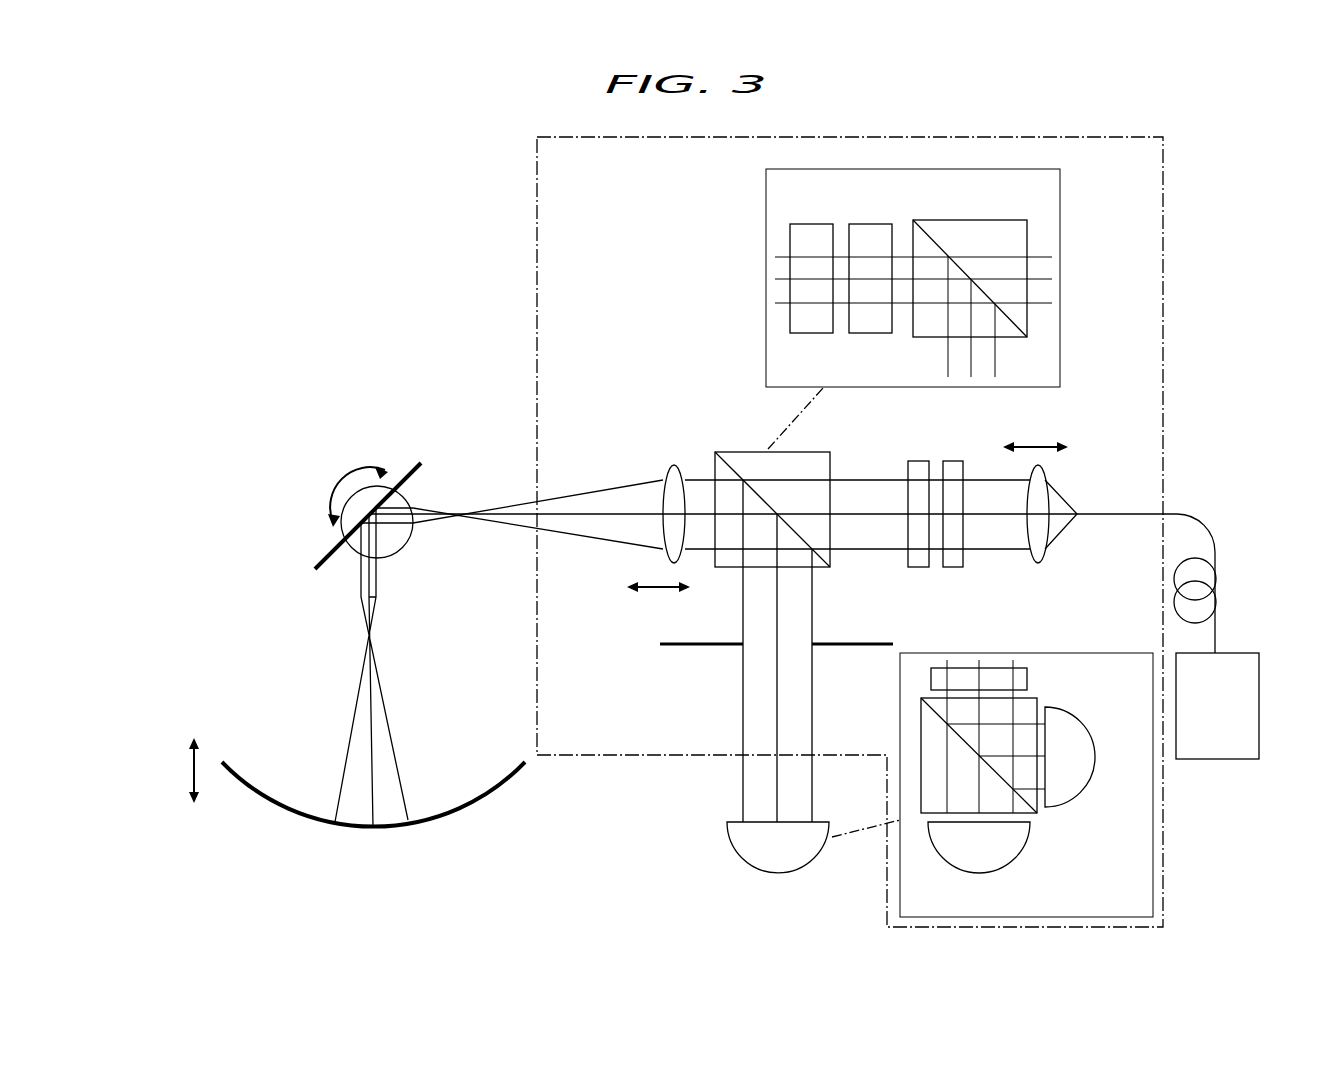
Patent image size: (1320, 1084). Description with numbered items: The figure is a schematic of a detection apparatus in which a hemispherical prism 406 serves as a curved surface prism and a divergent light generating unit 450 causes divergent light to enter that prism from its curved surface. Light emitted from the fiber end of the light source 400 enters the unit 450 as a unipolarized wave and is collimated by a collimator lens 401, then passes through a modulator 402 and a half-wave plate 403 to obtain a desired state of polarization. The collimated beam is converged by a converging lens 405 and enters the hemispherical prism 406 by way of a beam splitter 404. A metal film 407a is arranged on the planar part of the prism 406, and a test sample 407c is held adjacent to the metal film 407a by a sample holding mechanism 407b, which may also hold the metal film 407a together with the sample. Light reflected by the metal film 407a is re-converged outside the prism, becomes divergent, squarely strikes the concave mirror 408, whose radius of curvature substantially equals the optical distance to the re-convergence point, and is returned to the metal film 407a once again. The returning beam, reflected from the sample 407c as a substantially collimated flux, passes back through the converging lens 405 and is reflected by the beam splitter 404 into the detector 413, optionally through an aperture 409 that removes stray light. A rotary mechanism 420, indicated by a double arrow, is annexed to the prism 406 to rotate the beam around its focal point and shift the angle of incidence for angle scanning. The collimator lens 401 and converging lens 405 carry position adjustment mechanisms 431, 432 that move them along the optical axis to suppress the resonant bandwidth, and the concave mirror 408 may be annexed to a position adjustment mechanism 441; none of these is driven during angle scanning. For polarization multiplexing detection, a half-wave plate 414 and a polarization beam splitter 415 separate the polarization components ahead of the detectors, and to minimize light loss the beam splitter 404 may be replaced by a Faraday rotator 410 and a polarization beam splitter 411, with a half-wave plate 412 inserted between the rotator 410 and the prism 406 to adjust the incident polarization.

The light source 400 is at (1222, 762).
The collimator lens 401 is at (1042, 565).
The modulator 402 is at (955, 570).
The half-wave plate 403 is at (915, 570).
The beam splitter 404 is at (829, 448).
The converging lens 405 is at (677, 465).
The hemispherical prism 406 is at (400, 553).
The metal film 407a is at (412, 482).
The sample holding mechanism 407b is at (412, 482).
The test sample 407c is at (417, 457).
The concave mirror 408 is at (383, 829).
The aperture 409 is at (683, 650).
The Faraday rotator 410 is at (872, 226).
The polarization beam splitter 411 is at (972, 226).
The half-wave plate 412 is at (810, 226).
The detector 413 is at (729, 845).
The half-wave plate 414 is at (1030, 680).
The polarization beam splitter 415 is at (1037, 815).
The rotary mechanism 420 is at (333, 470).
The position adjustment mechanism 431 is at (1048, 449).
The position adjustment mechanism 432 is at (659, 594).
The position adjustment mechanism 441 is at (188, 773).
The divergent light generating unit 450 is at (590, 758).